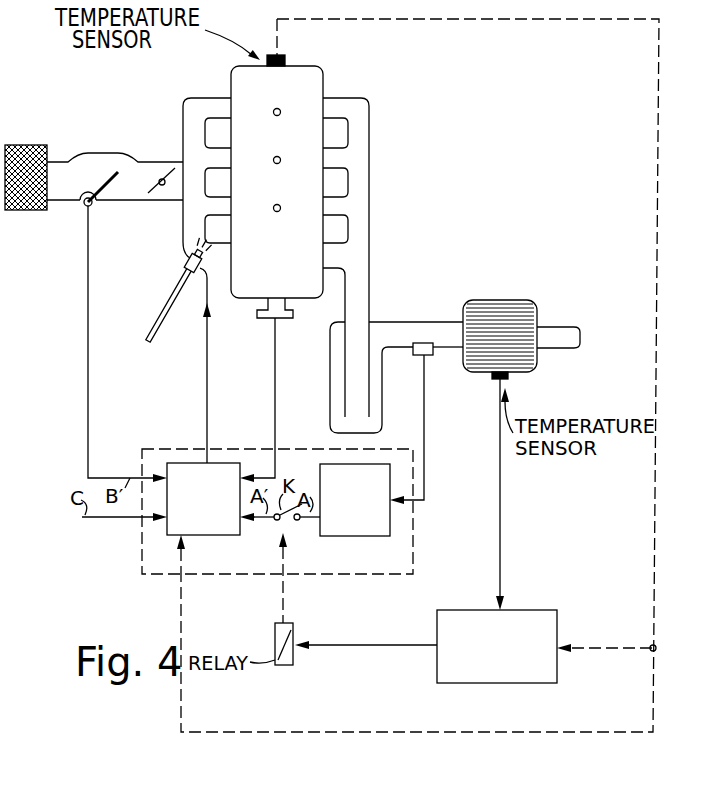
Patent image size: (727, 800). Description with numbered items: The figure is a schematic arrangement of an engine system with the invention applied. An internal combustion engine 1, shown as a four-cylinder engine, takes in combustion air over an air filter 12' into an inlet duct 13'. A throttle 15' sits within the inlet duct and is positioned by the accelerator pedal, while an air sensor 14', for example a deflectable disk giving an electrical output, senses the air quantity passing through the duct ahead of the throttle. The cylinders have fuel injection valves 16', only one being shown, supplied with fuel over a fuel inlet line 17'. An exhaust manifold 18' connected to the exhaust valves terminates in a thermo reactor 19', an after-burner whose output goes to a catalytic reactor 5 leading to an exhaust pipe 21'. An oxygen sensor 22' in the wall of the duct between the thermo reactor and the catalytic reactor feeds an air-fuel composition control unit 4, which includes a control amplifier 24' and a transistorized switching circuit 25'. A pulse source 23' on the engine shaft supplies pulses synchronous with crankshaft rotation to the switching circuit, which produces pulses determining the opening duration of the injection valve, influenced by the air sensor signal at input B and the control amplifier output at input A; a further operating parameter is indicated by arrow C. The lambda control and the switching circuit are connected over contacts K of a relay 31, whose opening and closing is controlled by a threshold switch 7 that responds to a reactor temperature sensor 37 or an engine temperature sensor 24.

The internal combustion engine 1 is at (310, 86).
The engine temperature sensor 24 is at (297, 47).
The air filter 12' is at (40, 165).
The inlet duct 13' is at (158, 153).
The air sensor 14' is at (123, 327).
The throttle 15' is at (163, 204).
The fuel injection valve 16' is at (180, 349).
The fuel inlet line 17' is at (175, 309).
The exhaust manifold 18' is at (373, 257).
The thermo reactor 19' is at (378, 377).
The oxygen sensor 22' is at (430, 423).
The catalytic reactor 5 is at (530, 307).
The exhaust pipe 21' is at (566, 359).
The temperature sensor 37 is at (510, 378).
The pulse source 23' is at (264, 390).
The air-fuel composition control unit 4 is at (168, 449).
The switching circuit 25' is at (203, 516).
The control amplifier 24' is at (355, 518).
The threshold switch 7 is at (524, 608).
The relay 31 is at (275, 632).